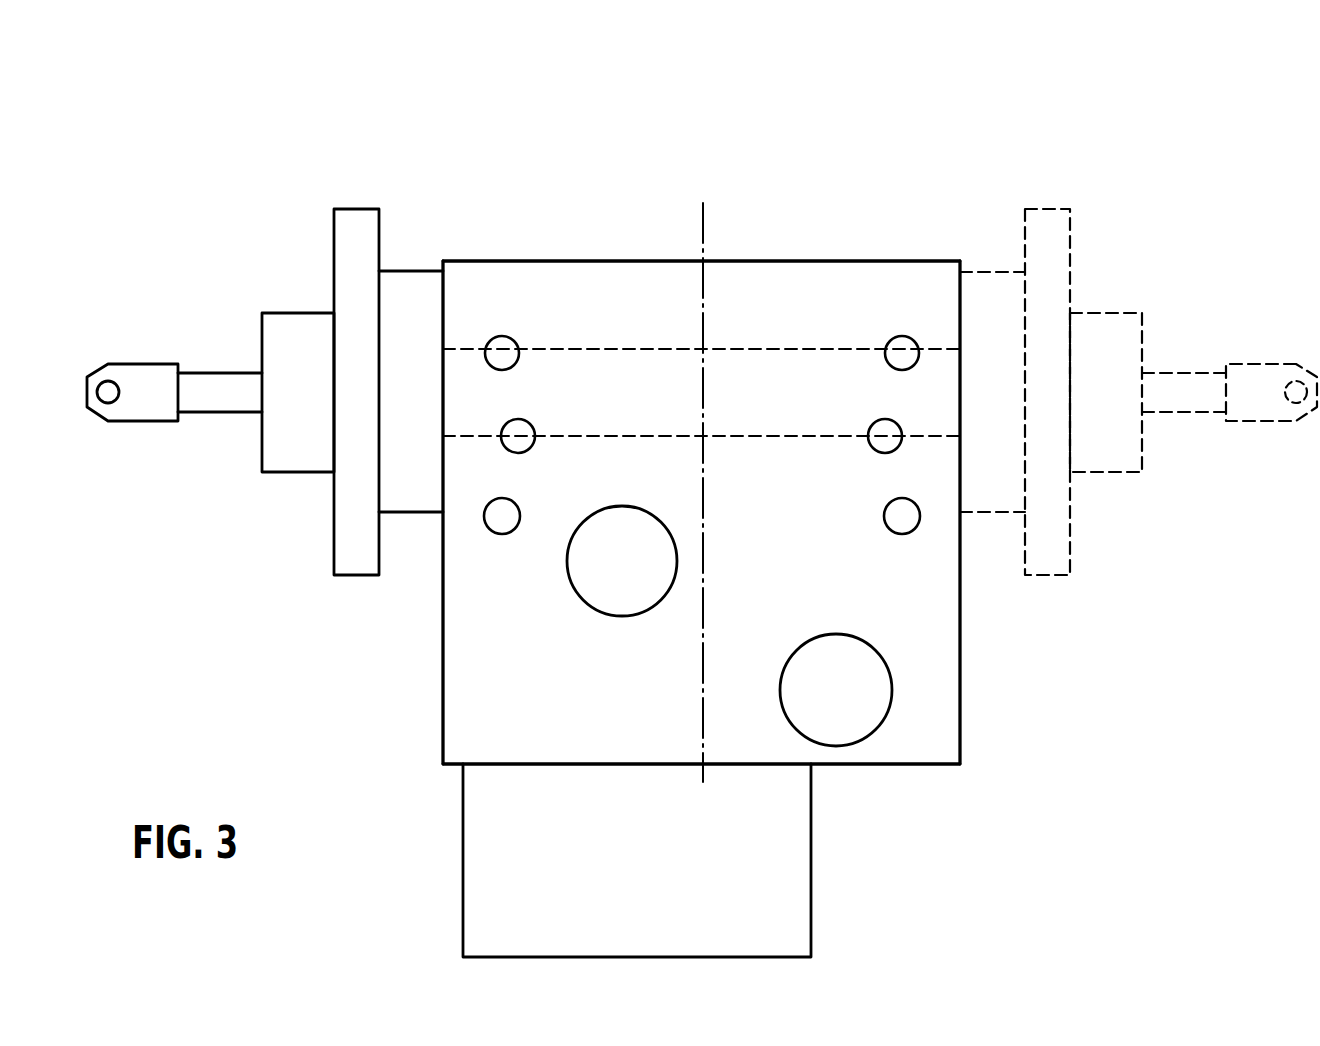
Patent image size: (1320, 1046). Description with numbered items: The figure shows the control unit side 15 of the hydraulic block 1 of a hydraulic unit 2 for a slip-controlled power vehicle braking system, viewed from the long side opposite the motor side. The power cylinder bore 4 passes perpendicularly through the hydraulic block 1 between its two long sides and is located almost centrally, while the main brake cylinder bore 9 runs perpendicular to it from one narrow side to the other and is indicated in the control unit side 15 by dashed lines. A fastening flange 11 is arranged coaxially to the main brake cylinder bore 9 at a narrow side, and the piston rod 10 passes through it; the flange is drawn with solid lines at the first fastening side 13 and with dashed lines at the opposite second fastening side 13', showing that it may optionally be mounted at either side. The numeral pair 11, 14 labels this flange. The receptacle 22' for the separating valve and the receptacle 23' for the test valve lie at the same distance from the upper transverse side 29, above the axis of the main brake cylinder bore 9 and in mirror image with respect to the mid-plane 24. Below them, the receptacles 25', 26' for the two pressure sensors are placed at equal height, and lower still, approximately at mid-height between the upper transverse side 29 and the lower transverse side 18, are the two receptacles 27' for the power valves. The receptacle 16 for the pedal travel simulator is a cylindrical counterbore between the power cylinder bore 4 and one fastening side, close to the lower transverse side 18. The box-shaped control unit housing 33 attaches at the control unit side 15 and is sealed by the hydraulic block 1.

The hydraulic block 1 is at (590, 280).
The hydraulic unit 2 is at (506, 146).
The power cylinder bore 4 is at (568, 560).
The main brake cylinder bore 9 is at (779, 349).
The piston rod 10 is at (222, 390).
The fastening flange 11 is at (713, 340).
The fastening plate 14 is at (357, 230).
The first fastening side 13 is at (392, 512).
The second fastening side 13' is at (1016, 512).
The control unit side 15 is at (593, 692).
The receptacle for pedal travel simulator 16 is at (890, 700).
The lower transverse side 18 is at (883, 783).
The receptacle for separating valve 22' is at (494, 287).
The receptacle for test valve 23' is at (911, 287).
The mid-plane 24 is at (702, 222).
The receptacle for pressure sensor 25' is at (562, 406).
The receptacle for pressure sensor 26' is at (843, 406).
The receptacles for power valves 27' is at (702, 534).
The upper transverse side 29 is at (833, 243).
The control unit housing 33 is at (493, 784).